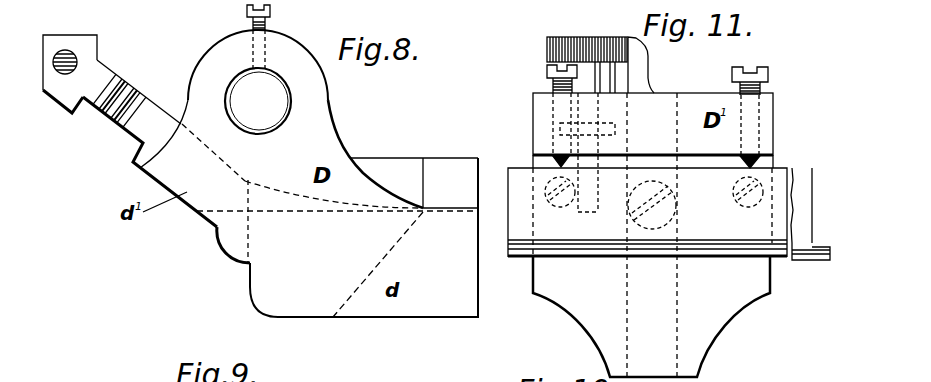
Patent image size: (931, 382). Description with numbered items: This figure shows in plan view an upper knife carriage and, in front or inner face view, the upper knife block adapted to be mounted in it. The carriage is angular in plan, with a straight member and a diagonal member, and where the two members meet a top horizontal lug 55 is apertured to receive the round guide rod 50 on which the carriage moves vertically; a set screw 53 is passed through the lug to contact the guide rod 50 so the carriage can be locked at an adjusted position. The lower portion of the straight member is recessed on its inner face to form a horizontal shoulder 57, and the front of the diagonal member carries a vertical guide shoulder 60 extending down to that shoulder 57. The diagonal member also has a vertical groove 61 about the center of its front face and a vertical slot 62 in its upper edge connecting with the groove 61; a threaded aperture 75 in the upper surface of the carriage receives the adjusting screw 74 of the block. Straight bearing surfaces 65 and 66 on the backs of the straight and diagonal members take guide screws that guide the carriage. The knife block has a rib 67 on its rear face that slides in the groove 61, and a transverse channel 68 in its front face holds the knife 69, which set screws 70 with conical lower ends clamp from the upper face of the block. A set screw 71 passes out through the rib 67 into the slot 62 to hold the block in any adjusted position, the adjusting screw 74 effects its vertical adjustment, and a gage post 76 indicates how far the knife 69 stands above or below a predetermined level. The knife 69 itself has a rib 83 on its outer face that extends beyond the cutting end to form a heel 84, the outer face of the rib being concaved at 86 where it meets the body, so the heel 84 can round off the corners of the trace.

In FIG. 8, the guide rod 50 is at (258, 101).
In FIG. 8, the set screw 53 is at (272, 11).
In FIG. 8, the top horizontal lug 55 is at (281, 119).
In FIG. 8, the horizontal shoulder 57 is at (345, 212).
In FIG. 8, the vertical guide shoulder 60 is at (233, 244).
In FIG. 8, the vertical groove 61 is at (100, 125).
In FIG. 8, the vertical slot 62 is at (133, 97).
In FIG. 8, the bearing surface 65 is at (460, 170).
In FIG. 8, the bearing surface 66 is at (77, 64).
In FIG. 11, the rib 67 is at (651, 317).
In FIG. 11, the transverse channel 68 is at (773, 160).
In FIG. 11, the knife 69 is at (647, 212).
In FIG. 11, the set screws 70 is at (547, 72).
In FIG. 11, the set screw 71 is at (652, 199).
In FIG. 11, the adjusting screw 74 is at (587, 54).
In FIG. 8, the aperture 75 is at (53, 66).
In FIG. 11, the gage post 76 is at (652, 73).
In FIG. 11, the rib 83 is at (572, 209).
In FIG. 11, the heel 84 is at (817, 250).
In FIG. 11, the concaved outer face of rib 86 is at (747, 250).